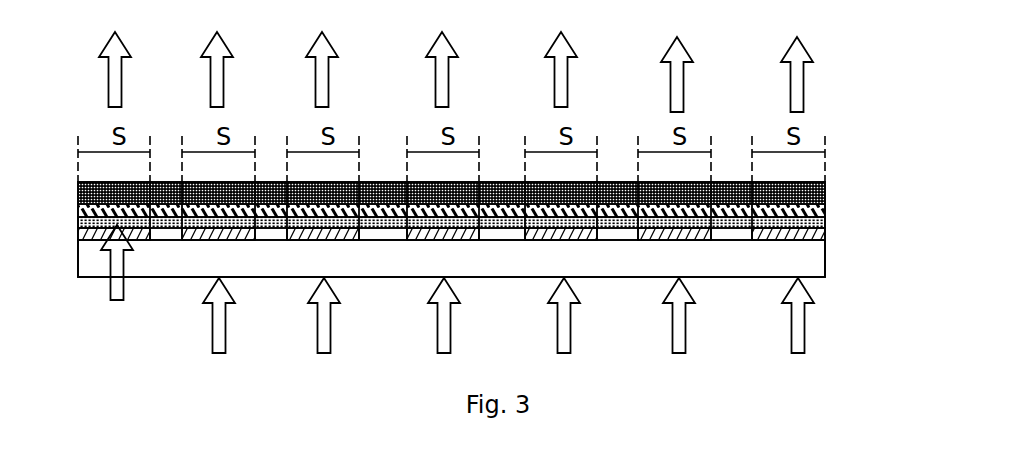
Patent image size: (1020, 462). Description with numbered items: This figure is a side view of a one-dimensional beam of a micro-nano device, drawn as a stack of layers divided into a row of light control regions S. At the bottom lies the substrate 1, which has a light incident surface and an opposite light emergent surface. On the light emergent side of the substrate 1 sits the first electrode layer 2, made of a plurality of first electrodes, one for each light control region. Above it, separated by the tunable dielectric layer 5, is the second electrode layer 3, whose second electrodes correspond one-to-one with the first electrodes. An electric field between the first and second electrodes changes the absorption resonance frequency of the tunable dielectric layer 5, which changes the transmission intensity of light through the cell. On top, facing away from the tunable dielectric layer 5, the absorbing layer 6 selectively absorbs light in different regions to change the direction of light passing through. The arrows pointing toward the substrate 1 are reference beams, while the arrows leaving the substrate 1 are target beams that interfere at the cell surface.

The substrate 1 is at (825, 262).
The first electrode layer 2 is at (825, 229).
The second electrode layer 3 is at (825, 205).
The tunable dielectric layer 5 is at (825, 218).
The absorbing layer 6 is at (825, 182).